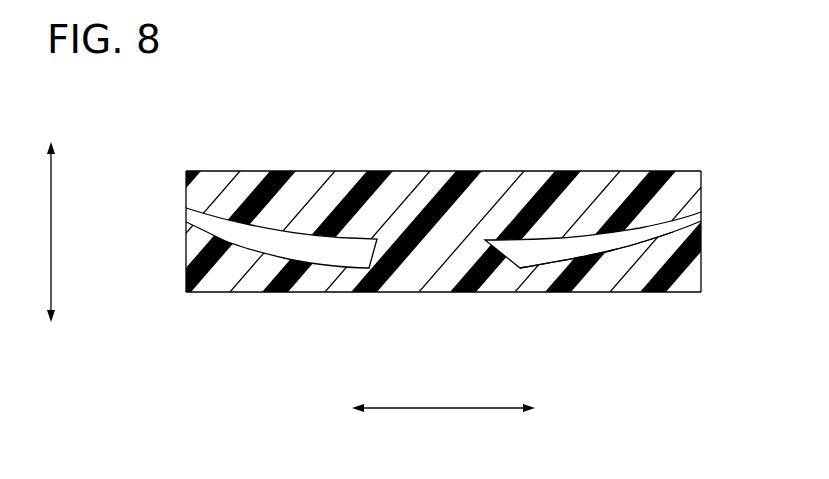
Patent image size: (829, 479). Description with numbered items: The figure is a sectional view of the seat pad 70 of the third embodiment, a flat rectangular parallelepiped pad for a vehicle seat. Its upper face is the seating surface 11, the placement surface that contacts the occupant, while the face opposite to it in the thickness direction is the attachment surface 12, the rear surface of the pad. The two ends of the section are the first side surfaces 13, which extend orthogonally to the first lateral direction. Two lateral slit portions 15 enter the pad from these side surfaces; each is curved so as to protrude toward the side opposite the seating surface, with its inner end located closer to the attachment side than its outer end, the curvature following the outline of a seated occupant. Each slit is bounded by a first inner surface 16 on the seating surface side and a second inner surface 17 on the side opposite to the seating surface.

The seat pad 70 is at (428, 235).
The seating surface 11 is at (450, 171).
The attachment surface 12 is at (442, 292).
The first side surface 13 is at (185, 258).
The lateral slit portion 15 is at (182, 208).
The first inner surface 16 is at (624, 226).
The second inner surface 17 is at (614, 256).